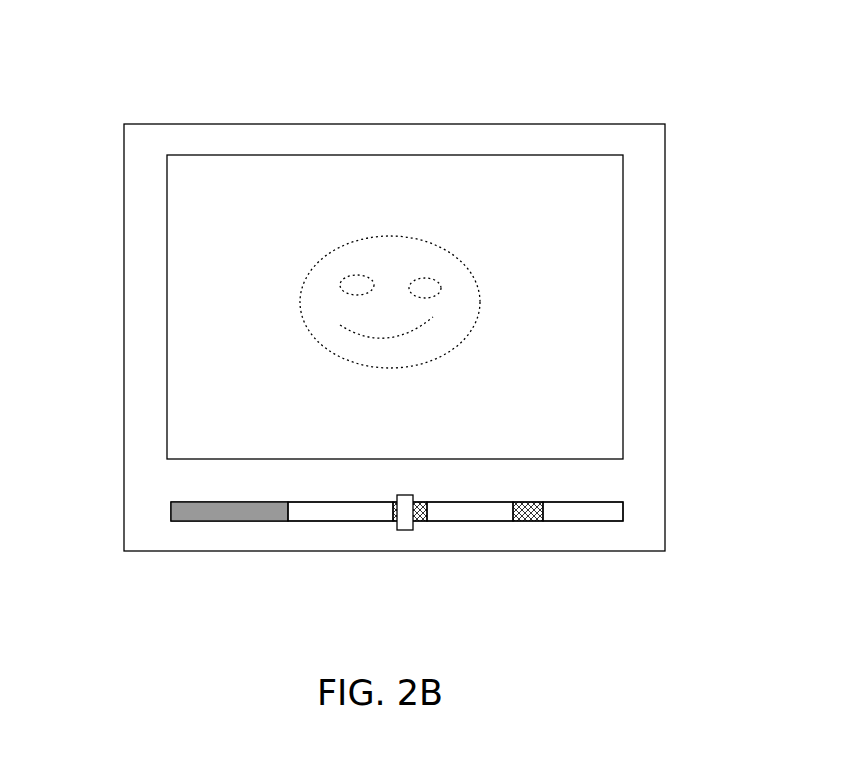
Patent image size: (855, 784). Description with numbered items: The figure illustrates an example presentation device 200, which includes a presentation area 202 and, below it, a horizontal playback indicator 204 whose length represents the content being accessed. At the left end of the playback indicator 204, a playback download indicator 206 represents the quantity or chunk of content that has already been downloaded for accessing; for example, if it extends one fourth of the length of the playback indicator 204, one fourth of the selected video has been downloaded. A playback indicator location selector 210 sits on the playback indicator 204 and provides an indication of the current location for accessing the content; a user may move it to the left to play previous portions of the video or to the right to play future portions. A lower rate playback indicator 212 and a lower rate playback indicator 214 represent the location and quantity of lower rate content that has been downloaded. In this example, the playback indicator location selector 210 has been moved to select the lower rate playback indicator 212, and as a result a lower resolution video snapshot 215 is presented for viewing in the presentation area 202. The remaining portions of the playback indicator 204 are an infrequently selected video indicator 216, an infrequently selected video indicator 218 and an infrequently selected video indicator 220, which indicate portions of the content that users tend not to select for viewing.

The presentation device 200 is at (196, 104).
The presentation area 202 is at (642, 180).
The playback indicator 204 is at (642, 513).
The playback download indicator 206 is at (250, 536).
The playback indicator location selector 210 is at (410, 479).
The lower rate playback indicator 212 is at (431, 540).
The lower rate playback indicator 214 is at (536, 544).
The lower resolution video snapshot 215 is at (497, 293).
The infrequently selected video indicator 216 is at (322, 533).
The infrequently selected video indicator 218 is at (460, 529).
The infrequently selected video indicator 220 is at (568, 529).